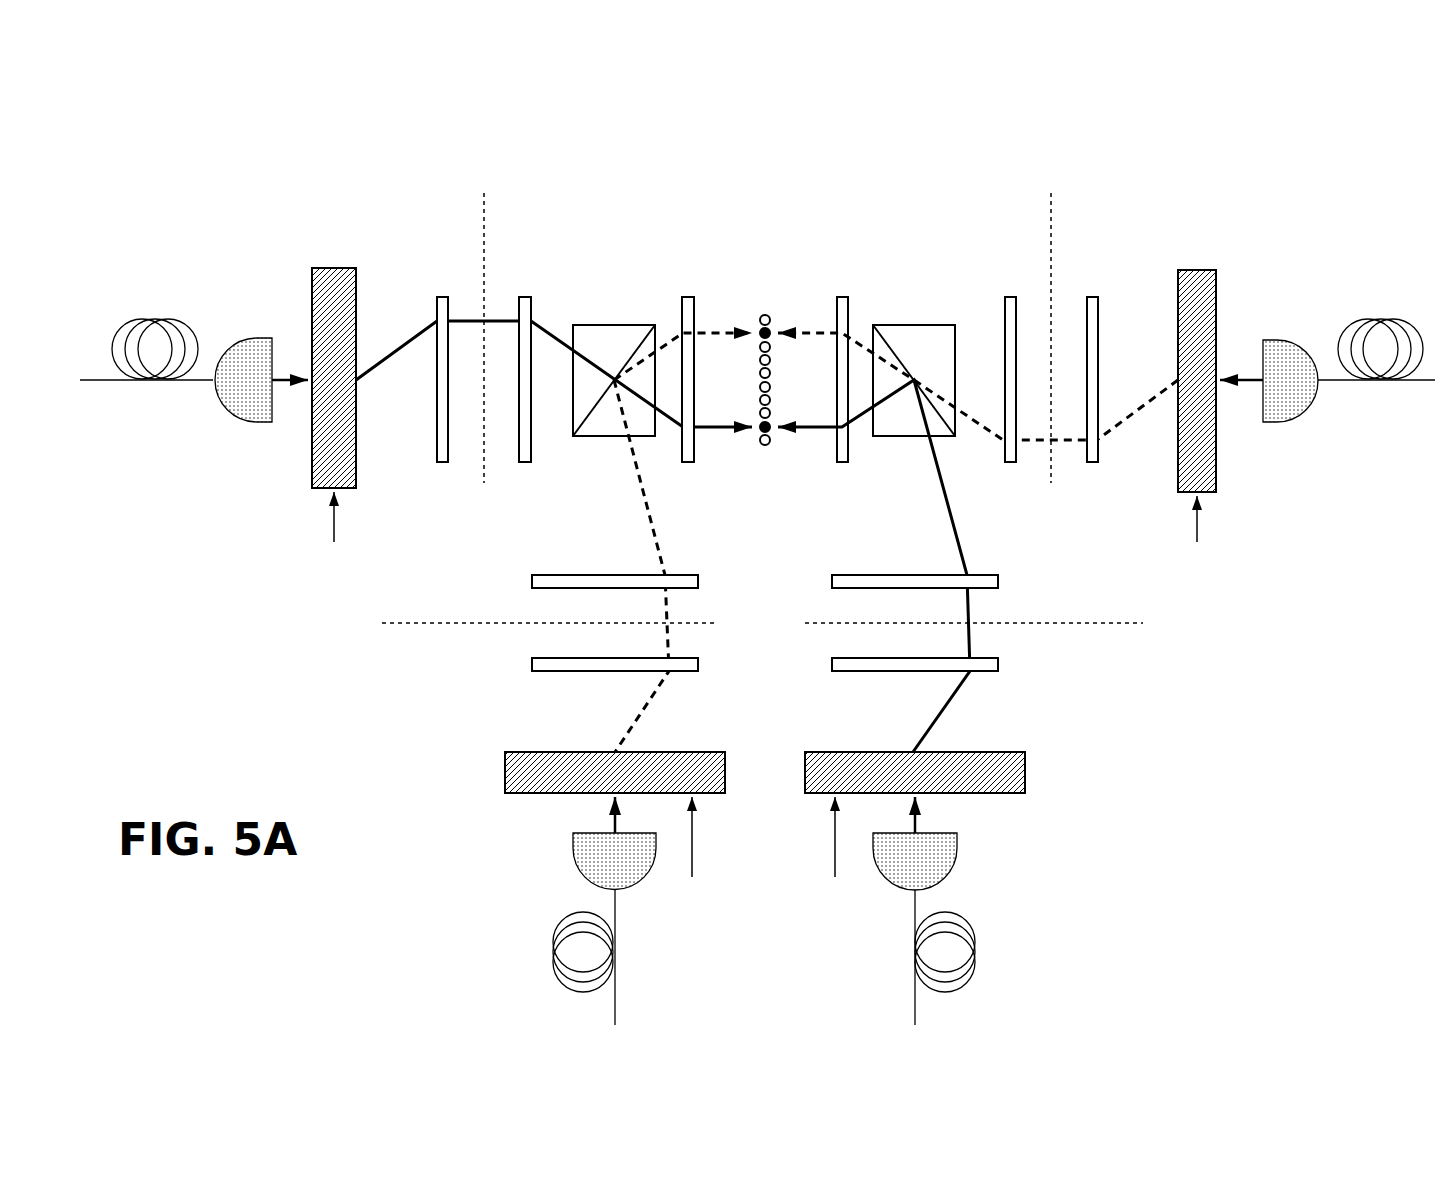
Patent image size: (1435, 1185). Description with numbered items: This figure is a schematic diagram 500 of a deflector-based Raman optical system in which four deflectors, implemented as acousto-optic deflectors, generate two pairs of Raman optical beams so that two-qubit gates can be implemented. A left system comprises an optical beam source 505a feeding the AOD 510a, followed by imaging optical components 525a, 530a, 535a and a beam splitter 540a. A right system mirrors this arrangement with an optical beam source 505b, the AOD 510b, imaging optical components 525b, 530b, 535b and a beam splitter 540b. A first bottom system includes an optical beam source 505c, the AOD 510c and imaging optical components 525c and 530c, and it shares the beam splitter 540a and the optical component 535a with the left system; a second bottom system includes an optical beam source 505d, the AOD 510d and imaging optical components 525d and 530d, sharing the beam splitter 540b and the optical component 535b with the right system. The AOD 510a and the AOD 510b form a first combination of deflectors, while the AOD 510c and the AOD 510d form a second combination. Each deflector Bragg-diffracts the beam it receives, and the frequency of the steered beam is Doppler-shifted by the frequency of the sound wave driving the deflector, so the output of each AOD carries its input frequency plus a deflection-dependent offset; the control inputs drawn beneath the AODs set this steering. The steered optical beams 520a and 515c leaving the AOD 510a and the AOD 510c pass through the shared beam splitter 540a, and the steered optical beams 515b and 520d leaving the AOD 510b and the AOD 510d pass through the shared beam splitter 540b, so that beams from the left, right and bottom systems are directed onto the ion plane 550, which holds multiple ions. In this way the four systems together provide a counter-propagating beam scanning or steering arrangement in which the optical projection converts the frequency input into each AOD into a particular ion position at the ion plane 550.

The diagram 500 is at (212, 172).
The optical beam source 505a is at (258, 338).
The optical beam source 505b is at (1285, 340).
The optical beam source 505c is at (573, 838).
The optical beam source 505d is at (957, 840).
The AOD 510a is at (338, 268).
The AOD 510b is at (1200, 270).
The AOD 510c is at (505, 766).
The AOD 510d is at (1025, 770).
The diffracted beam 515b is at (1147, 406).
The diffracted beam 515c is at (648, 705).
The beam 520a is at (402, 344).
The beam 520d is at (953, 700).
The imaging optical component 525a is at (442, 297).
The imaging optical component 525b is at (1092, 297).
The imaging optical component 525c is at (532, 663).
The imaging optical component 525d is at (998, 663).
The imaging optical component 530a is at (525, 297).
The imaging optical component 530b is at (1010, 297).
The imaging optical component 530c is at (532, 580).
The imaging optical component 530d is at (998, 580).
The optical component 535a is at (688, 297).
The optical component 535b is at (843, 297).
The beam splitter 540a is at (616, 325).
The beam splitter 540b is at (914, 325).
The ion plane 550 is at (765, 304).